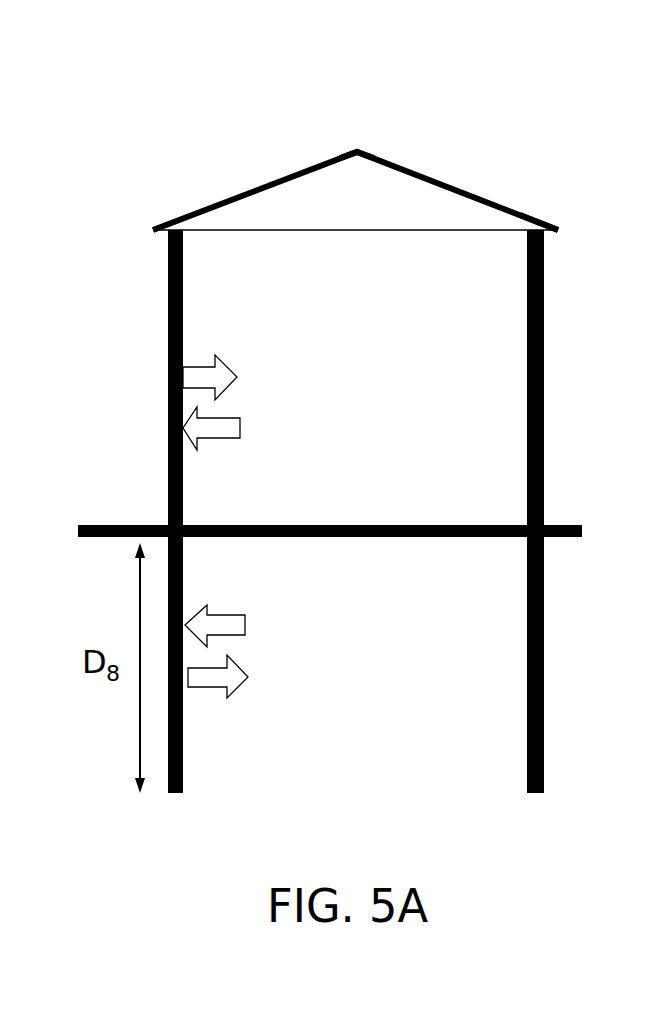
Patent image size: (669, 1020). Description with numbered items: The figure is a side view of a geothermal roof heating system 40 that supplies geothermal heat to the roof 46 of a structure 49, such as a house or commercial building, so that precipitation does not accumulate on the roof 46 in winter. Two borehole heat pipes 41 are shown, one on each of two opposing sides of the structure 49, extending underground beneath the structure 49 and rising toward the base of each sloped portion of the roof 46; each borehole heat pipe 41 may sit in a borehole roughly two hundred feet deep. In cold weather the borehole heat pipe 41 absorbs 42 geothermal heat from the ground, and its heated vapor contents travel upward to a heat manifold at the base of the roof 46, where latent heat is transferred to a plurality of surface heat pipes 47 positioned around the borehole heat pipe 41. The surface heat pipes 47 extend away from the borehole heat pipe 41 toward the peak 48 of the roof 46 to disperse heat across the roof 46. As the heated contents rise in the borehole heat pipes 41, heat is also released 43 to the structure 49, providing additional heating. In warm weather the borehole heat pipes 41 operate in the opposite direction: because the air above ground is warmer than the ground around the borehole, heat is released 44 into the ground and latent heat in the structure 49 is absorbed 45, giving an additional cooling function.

The geothermal roof heating system 40 is at (137, 336).
The borehole heat pipe 41 is at (553, 428).
The absorption of geothermal heat 42 is at (245, 615).
The release of heat to the structure 43 is at (220, 397).
The release of heat into the ground 44 is at (245, 682).
The absorption of latent heat from the structure 45 is at (240, 438).
The roof 46 is at (528, 216).
The surface heat pipe 47 is at (412, 170).
The peak of the roof 48 is at (357, 152).
The structure 49 is at (508, 318).